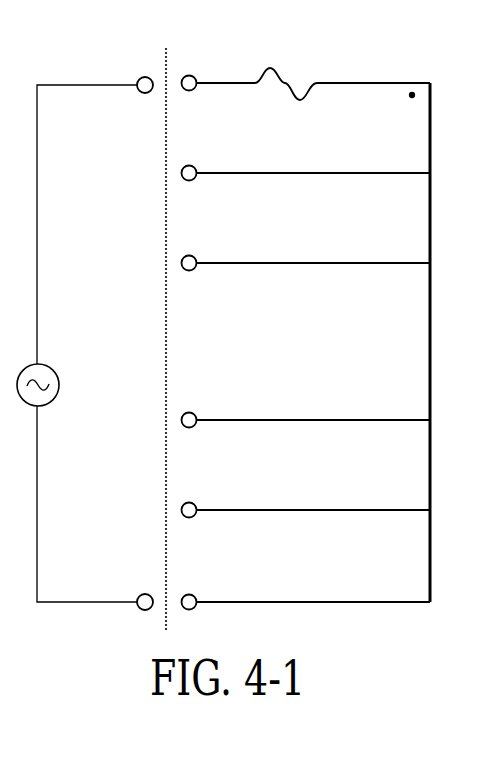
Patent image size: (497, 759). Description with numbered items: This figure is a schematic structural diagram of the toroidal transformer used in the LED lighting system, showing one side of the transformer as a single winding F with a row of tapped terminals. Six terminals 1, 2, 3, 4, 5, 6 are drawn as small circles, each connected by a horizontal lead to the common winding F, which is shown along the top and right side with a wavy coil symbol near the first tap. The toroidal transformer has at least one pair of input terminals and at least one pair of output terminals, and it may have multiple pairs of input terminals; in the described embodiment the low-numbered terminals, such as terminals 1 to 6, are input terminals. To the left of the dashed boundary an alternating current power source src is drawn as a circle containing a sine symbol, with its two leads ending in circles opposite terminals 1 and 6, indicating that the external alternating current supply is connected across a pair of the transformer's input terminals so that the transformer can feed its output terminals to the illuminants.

The terminal 1 is at (219, 72).
The terminal 2 is at (306, 162).
The terminal 3 is at (306, 252).
The terminal 4 is at (306, 409).
The terminal 5 is at (306, 499).
The terminal 6 is at (306, 591).
The heating element / resistive film F is at (313, 312).
The AC power source src is at (85, 343).